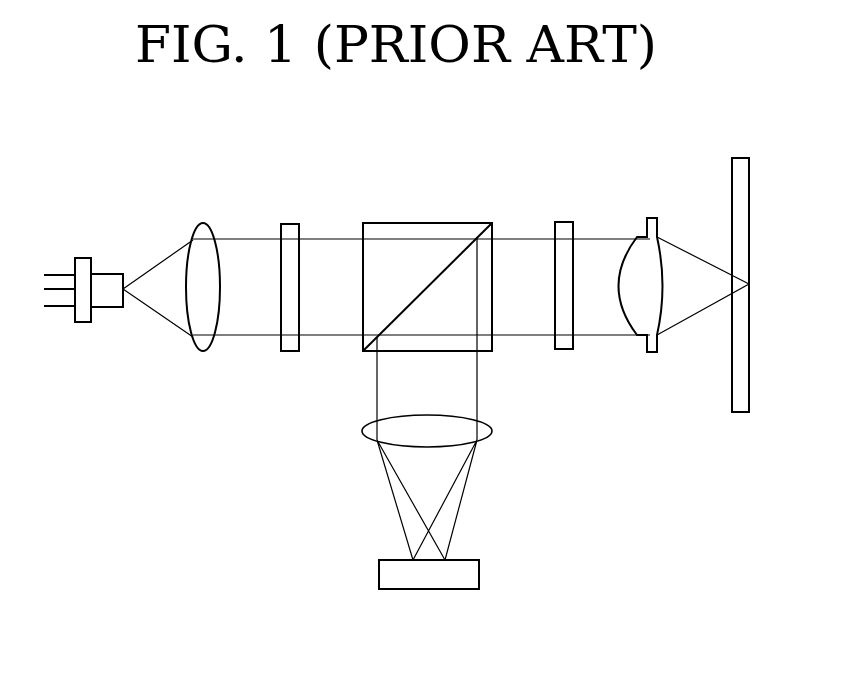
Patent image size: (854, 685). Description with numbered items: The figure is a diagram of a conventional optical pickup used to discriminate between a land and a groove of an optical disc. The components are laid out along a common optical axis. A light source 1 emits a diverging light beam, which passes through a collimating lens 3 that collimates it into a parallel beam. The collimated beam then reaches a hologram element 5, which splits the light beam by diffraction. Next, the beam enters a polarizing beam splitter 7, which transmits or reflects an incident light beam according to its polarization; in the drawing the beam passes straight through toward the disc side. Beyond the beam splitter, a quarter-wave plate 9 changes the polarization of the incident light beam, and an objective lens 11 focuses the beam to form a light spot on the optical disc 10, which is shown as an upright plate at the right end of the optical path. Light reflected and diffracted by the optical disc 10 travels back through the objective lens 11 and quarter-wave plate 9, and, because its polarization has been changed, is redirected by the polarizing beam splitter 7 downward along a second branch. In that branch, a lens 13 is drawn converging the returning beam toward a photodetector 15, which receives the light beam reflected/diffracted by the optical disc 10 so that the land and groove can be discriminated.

The light source 1 is at (109, 275).
The collimating lens 3 is at (204, 229).
The hologram element 5 is at (292, 227).
The polarizing beam splitter 7 is at (447, 228).
The quarter-wave plate 9 is at (565, 223).
The optical disc 10 is at (742, 404).
The objective lens 11 is at (652, 217).
The condensing lens 13 is at (488, 432).
The photodetector 15 is at (474, 575).